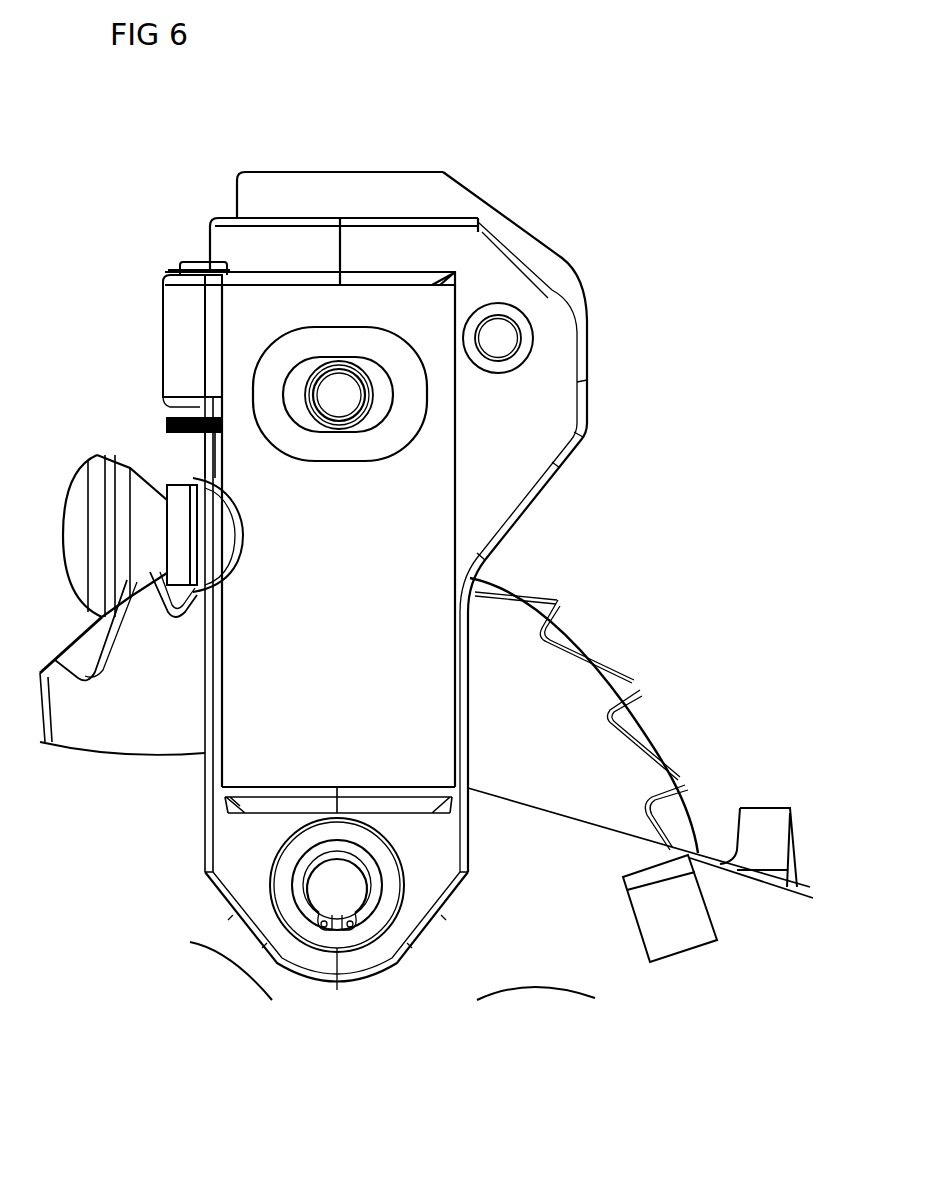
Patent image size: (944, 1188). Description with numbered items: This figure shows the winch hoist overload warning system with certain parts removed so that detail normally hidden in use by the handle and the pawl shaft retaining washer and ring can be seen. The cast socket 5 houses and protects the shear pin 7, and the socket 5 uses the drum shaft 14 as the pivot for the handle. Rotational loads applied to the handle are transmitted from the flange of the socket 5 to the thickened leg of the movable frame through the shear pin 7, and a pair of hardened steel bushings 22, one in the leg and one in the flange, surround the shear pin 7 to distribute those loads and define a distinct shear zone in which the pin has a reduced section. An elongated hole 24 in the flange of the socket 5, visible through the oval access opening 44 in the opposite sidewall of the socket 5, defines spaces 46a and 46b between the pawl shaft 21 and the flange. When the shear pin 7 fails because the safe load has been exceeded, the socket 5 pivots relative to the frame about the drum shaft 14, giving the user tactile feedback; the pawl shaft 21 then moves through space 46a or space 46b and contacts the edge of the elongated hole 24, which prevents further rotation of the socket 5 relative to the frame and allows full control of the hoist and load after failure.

The socket 5 is at (347, 605).
The shear pin 7 is at (498, 340).
The drum shaft 14 is at (347, 875).
The pawl shaft 21 is at (333, 372).
The hardened steel bushings 22 is at (520, 323).
The elongated hole 24 is at (385, 372).
The oval access opening 44 is at (375, 457).
The space 46a is at (295, 402).
The space 46b is at (380, 400).